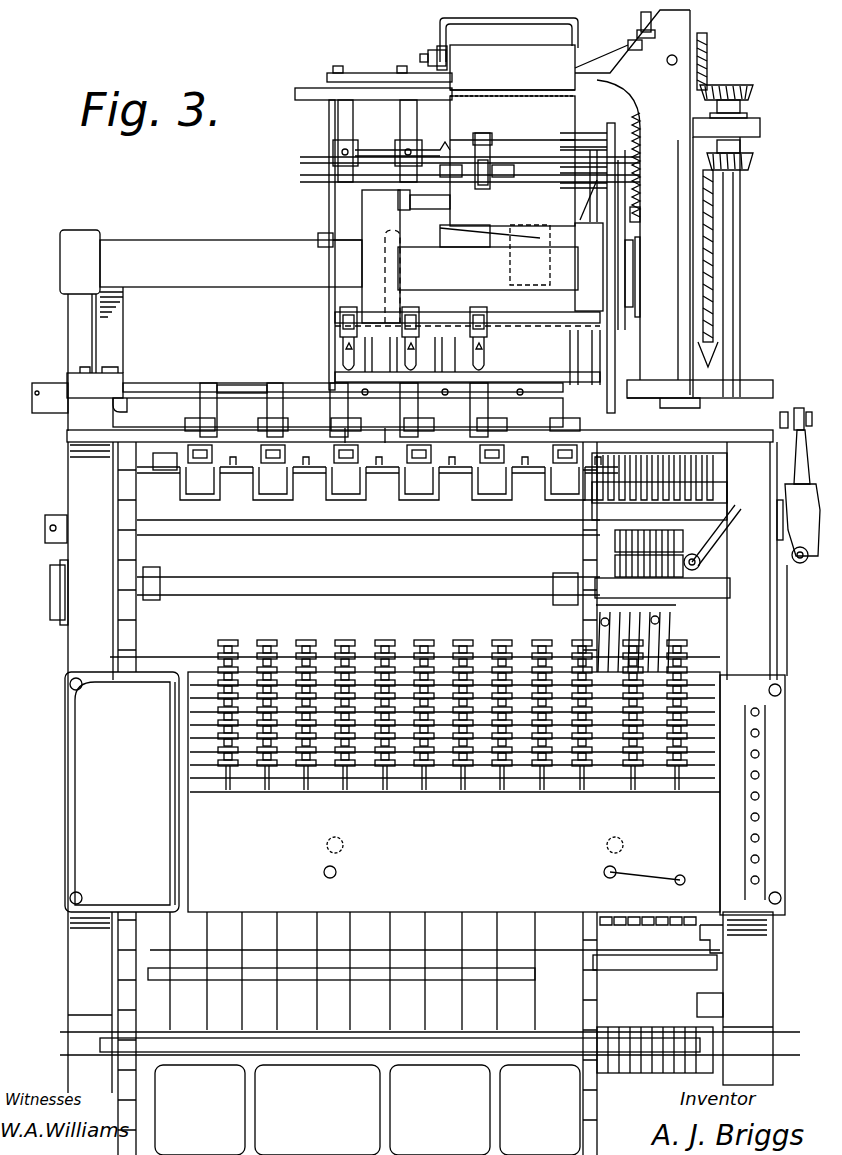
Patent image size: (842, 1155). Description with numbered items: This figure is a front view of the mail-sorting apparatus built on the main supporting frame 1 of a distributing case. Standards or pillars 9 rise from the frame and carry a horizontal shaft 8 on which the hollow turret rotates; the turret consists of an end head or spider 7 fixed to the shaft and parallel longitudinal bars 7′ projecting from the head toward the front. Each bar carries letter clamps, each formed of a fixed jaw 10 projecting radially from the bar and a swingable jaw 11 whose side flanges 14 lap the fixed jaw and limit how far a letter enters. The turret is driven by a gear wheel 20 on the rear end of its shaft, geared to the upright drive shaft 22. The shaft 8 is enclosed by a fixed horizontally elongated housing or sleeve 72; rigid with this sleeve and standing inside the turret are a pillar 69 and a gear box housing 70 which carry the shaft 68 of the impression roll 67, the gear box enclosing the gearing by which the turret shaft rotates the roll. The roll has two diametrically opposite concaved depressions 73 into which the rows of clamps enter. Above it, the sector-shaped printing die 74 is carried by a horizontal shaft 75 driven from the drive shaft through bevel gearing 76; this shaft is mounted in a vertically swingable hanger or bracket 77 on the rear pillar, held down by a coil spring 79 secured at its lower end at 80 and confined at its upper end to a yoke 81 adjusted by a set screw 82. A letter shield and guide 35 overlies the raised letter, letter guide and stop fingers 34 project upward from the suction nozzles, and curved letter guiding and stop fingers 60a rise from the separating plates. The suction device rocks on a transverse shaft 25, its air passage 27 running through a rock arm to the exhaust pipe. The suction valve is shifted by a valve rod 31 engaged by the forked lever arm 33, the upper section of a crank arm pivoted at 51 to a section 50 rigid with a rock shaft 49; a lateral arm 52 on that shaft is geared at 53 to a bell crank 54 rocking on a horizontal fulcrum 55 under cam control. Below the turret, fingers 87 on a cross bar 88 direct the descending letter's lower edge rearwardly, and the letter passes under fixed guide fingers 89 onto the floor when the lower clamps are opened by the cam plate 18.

The main supporting frame 1 is at (66, 657).
The end head or spider 7 is at (604, 282).
The longitudinal bars 7′ is at (330, 160).
The horizontal shaft 8 is at (688, 285).
The standards or pillars 9 is at (68, 343).
The fixed jaw 10 is at (484, 178).
The swingable jaw 11 is at (491, 152).
The side flanges 14 is at (481, 174).
The cam plate 18 is at (632, 202).
The gear wheel 20 is at (715, 305).
The upright drive shaft 22 is at (742, 222).
The transverse shaft 25 is at (465, 533).
The air passage 27 is at (754, 165).
The valve rod 31 is at (782, 412).
The lever arm 33 is at (798, 408).
The letter guide and stop fingers 34 is at (498, 240).
The letter shield and guide 35 is at (348, 98).
The rock shaft 49 is at (800, 563).
The crank arm section 50 is at (790, 496).
The hinge or pivot 51 is at (796, 470).
The lateral arm 52 is at (777, 515).
The gearing 53 is at (682, 562).
The bell crank 54 is at (715, 548).
The horizontal fulcrum 55 is at (700, 562).
The letter guiding and stop fingers 60a is at (456, 222).
The impression roll 67 is at (512, 161).
The shaft 68 is at (445, 147).
The pillar 69 is at (600, 215).
The gear box housing 70 is at (390, 284).
The housing or sleeve 72 is at (230, 256).
The concaved depressions 73 is at (512, 103).
The printing die 74 is at (512, 67).
The horizontal shaft 75 is at (428, 60).
The bevel gearing 76 is at (710, 92).
The hanger or bracket 77 is at (440, 33).
The coil spring 79 is at (642, 150).
The spring anchorage 80 is at (641, 218).
The yoke 81 is at (628, 45).
The set screw 82 is at (641, 30).
The fingers 87 is at (212, 384).
The cross bar 88 is at (145, 432).
The guide fingers 89 is at (355, 440).